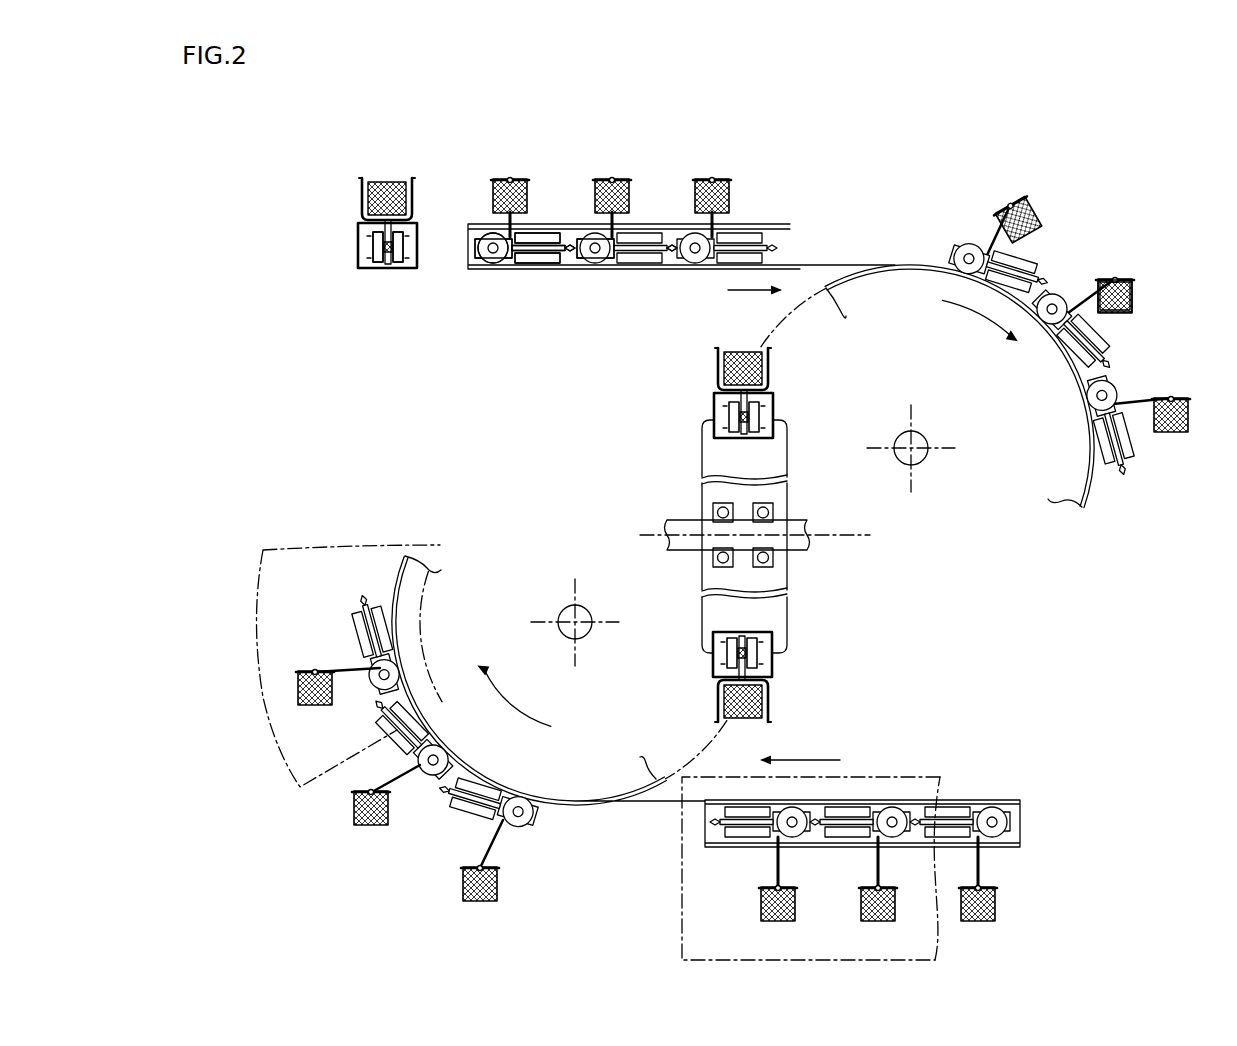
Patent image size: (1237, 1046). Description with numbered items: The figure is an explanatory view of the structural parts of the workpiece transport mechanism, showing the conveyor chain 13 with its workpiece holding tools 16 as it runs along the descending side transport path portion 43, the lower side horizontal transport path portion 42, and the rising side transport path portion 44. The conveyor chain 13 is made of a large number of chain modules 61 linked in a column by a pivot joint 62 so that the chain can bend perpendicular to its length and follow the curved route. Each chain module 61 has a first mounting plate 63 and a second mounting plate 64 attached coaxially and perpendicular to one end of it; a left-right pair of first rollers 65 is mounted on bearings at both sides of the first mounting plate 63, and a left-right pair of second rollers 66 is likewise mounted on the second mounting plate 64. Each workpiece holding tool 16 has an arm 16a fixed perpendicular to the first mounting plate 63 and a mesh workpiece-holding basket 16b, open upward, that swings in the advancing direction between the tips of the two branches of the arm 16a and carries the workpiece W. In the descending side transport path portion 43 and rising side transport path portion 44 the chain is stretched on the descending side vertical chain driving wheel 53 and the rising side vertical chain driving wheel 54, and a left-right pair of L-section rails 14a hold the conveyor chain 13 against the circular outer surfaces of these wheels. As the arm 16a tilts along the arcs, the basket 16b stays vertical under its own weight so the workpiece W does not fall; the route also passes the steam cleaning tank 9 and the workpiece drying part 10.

The steam cleaning tank 9 is at (678, 903).
The workpiece drying part 10 is at (272, 732).
The conveyor chain 13 is at (740, 190).
The rails 14a is at (775, 398).
The workpiece holding tool 16 is at (364, 179).
The arm 16a is at (1086, 297).
The workpiece-holding basket 16b is at (1138, 287).
The workpiece W is at (1138, 306).
The lower side horizontal transport path portion 42 is at (902, 791).
The descending side transport path portion 43 is at (1078, 447).
The rising side transport path portion 44 is at (402, 635).
The descending side vertical chain driving wheel 53 is at (886, 392).
The rising side vertical chain driving wheel 54 is at (599, 662).
The chain module 61 is at (552, 216).
The pivot joint 62 is at (570, 264).
The first mounting plate 63 is at (389, 270).
The second mounting plate 64 is at (566, 252).
The first rollers 65 is at (375, 263).
The second rollers 66 is at (538, 233).